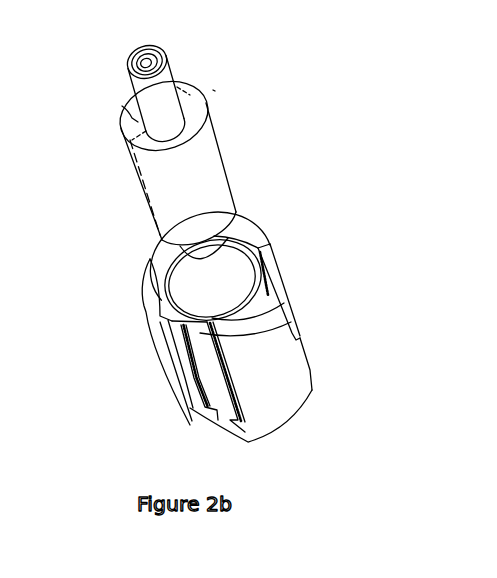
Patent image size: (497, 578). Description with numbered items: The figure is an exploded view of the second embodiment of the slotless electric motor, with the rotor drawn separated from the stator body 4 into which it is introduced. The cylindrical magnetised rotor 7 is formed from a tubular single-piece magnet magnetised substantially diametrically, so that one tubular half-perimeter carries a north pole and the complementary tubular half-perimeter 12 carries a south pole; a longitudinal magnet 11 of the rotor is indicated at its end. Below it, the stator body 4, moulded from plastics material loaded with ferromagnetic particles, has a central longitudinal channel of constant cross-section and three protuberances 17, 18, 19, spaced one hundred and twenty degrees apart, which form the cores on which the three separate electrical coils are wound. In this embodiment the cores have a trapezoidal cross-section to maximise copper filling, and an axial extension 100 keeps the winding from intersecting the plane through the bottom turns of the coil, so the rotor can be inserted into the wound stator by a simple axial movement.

The longitudinal magnet 11 is at (123, 106).
The cylindrical magnetised rotor 7 is at (213, 90).
The complementary tubular half-perimeter 12 is at (210, 141).
The body 4 is at (289, 232).
The protuberance 18 is at (301, 283).
The axial extension 100 is at (255, 305).
The protuberance 19 is at (153, 369).
The protuberance 17 is at (288, 388).